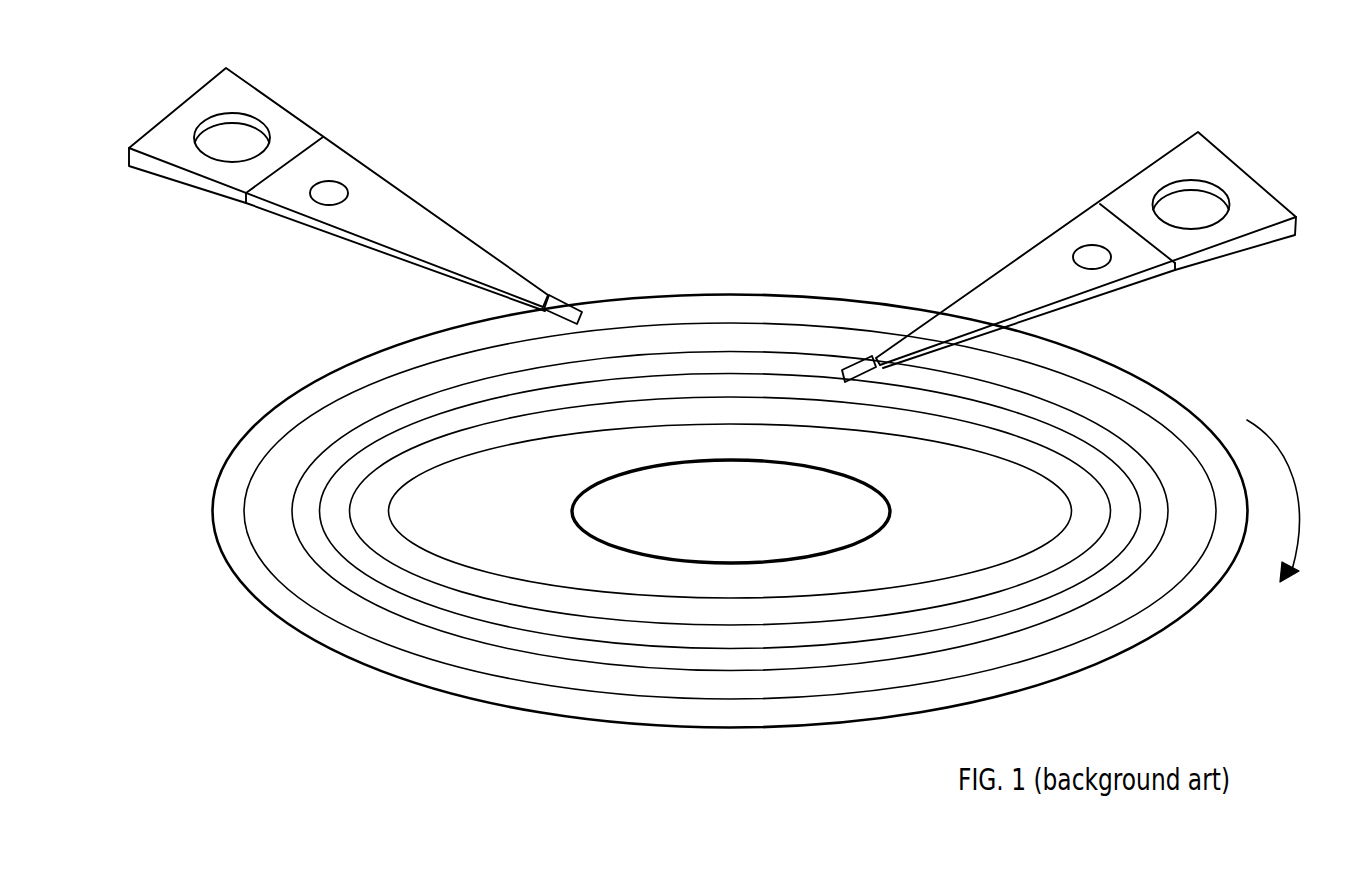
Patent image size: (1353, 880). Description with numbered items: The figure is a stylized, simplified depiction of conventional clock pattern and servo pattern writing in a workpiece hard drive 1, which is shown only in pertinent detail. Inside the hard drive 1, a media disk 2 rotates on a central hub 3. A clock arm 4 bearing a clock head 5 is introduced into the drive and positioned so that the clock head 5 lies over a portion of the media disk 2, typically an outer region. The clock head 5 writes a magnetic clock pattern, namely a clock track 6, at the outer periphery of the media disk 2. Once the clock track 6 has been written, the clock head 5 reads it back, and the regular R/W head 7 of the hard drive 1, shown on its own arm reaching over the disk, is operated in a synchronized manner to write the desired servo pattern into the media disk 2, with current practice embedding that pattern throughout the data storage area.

The workpiece hard drive 1 is at (315, 716).
The media disk 2 is at (518, 518).
The hub 3 is at (736, 518).
The clock arm 4 is at (401, 234).
The clock head 5 is at (573, 307).
The clock track 6 is at (746, 307).
The R/W head 7 is at (863, 365).